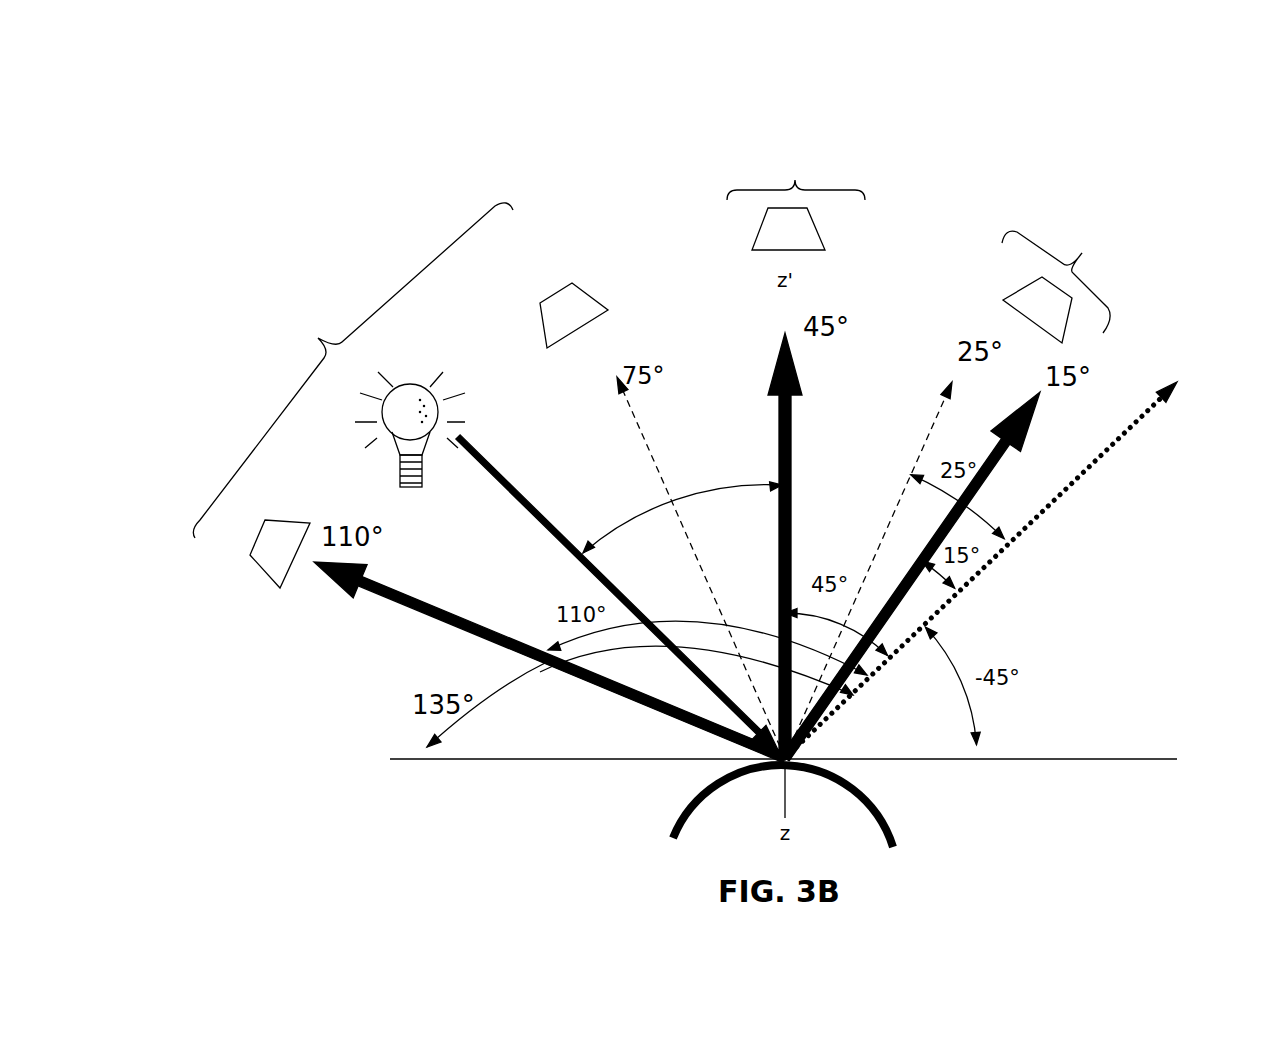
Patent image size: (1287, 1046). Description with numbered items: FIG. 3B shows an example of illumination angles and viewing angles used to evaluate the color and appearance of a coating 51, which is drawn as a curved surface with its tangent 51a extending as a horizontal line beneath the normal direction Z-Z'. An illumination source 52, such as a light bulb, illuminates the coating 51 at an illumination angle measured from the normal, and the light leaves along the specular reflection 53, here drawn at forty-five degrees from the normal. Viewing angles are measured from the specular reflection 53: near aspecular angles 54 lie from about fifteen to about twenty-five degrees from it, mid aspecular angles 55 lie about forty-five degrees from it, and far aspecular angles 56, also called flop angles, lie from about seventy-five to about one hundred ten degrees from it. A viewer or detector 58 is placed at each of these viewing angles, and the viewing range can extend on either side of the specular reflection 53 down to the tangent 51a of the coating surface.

The coating 51 is at (878, 808).
The tangent of the surface of the coating 51a is at (1135, 760).
The illumination source 52 is at (410, 382).
The specular reflection 53 is at (1143, 420).
The near aspecular angles 54 is at (1086, 193).
The mid aspecular angles 55 is at (796, 168).
The far aspecular angles 56 is at (301, 312).
The detector 58 is at (757, 228).